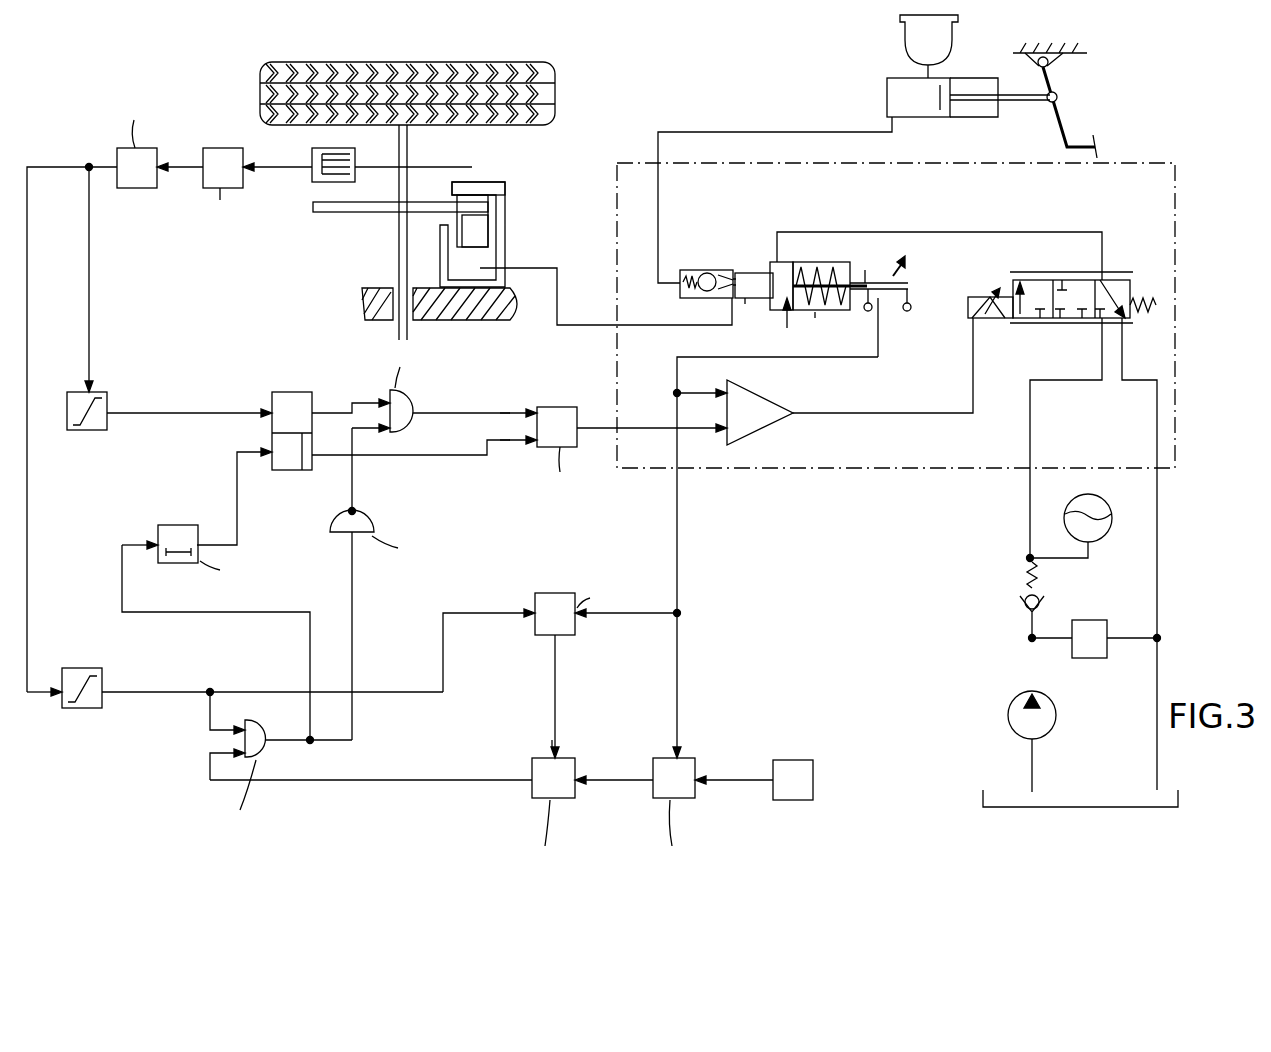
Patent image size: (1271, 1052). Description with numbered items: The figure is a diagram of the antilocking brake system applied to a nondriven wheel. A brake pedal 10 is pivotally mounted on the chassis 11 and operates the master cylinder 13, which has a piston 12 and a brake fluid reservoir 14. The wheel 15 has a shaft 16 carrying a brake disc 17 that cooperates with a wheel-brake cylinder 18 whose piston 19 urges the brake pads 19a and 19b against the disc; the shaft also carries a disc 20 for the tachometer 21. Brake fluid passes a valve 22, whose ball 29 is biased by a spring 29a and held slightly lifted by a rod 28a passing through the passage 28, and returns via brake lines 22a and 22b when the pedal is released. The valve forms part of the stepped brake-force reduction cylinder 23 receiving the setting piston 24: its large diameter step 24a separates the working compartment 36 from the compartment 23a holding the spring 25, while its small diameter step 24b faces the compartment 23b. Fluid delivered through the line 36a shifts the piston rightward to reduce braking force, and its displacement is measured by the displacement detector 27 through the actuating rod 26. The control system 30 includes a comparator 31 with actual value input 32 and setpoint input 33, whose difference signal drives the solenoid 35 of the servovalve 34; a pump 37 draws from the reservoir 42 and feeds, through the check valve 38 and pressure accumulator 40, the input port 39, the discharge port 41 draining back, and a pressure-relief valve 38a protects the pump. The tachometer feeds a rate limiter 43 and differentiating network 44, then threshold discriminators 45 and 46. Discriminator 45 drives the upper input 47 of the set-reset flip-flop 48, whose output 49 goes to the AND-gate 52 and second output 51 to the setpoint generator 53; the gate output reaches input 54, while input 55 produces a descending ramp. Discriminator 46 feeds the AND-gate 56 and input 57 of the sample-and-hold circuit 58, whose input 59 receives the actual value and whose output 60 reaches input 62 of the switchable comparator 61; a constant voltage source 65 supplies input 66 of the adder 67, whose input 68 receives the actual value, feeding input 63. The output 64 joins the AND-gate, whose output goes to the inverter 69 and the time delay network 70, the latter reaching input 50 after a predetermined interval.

The brake pedal 10 is at (1097, 146).
The chassis 11 is at (363, 296).
The piston 12 is at (952, 108).
The master cylinder 13 is at (978, 78).
The brake fluid reservoir 14 is at (905, 42).
The wheel 15 is at (264, 74).
The shaft 16 is at (398, 246).
The brake disc 17 is at (337, 214).
The wheel-brake cylinder 18 is at (492, 270).
The piston 19 is at (490, 240).
The brake pad 19a is at (505, 184).
The brake pad 19b is at (488, 215).
The disc 20 is at (472, 167).
The angular velocity-measuring instrument 21 is at (311, 180).
The valve 22 is at (688, 270).
The brake line 22a is at (578, 323).
The brake line 22b is at (677, 132).
The brake-force reduction cylinder 23 is at (830, 262).
The compartment 23a is at (815, 316).
The compartment 23b is at (745, 304).
The setting piston 24 is at (782, 326).
The large diameter step 24a is at (797, 262).
The small diameter step 24b is at (752, 273).
The spring 25 is at (840, 272).
The actuating rod 26 is at (870, 276).
The displacement detector 27 is at (905, 284).
The passage 28 is at (712, 306).
The rod 28a is at (723, 270).
The ball 29 is at (706, 272).
The spring 29a is at (690, 300).
The control system 30 is at (1162, 158).
The comparator 31 is at (762, 437).
The actual value input 32 is at (701, 381).
The setpoint input 33 is at (652, 417).
The servovalve 34 is at (1036, 280).
The solenoid 35 is at (990, 320).
The working compartment 36 is at (772, 262).
The line 36a is at (957, 232).
The pump 37 is at (1056, 722).
The check valve 38 is at (1040, 608).
The pressure-relief valve 38a is at (1098, 660).
The input port 39 is at (1066, 438).
The pressure accumulator 40 is at (1095, 505).
The discharge port 41 is at (1135, 322).
The reservoir 42 is at (983, 797).
The rate limiter 43 is at (224, 148).
The differentiating network 44 is at (131, 182).
The threshold discriminator 45 is at (79, 432).
The threshold discriminator 46 is at (80, 710).
The upper input 47 is at (226, 412).
The set-reset flip-flop 48 is at (290, 392).
The output 49 is at (331, 405).
The input 50 is at (250, 460).
The second output 51 is at (330, 458).
The AND-gate 52 is at (410, 424).
The setpoint generator 53 is at (560, 407).
The input 54 is at (514, 411).
The input 55 is at (517, 450).
The AND-gate 56 is at (262, 718).
The input 57 is at (504, 620).
The sample-and-hold circuit 58 is at (558, 593).
The input 59 is at (602, 620).
The output 60 is at (558, 680).
The switchable comparator 61 is at (576, 760).
The input 62 is at (550, 752).
The input 63 is at (608, 782).
The output 64 is at (490, 782).
The constant voltage source 65 is at (815, 778).
The input 66 is at (726, 784).
The adder 67 is at (697, 766).
The input 68 is at (680, 700).
The inverter 69 is at (376, 525).
The time delay network 70 is at (180, 525).